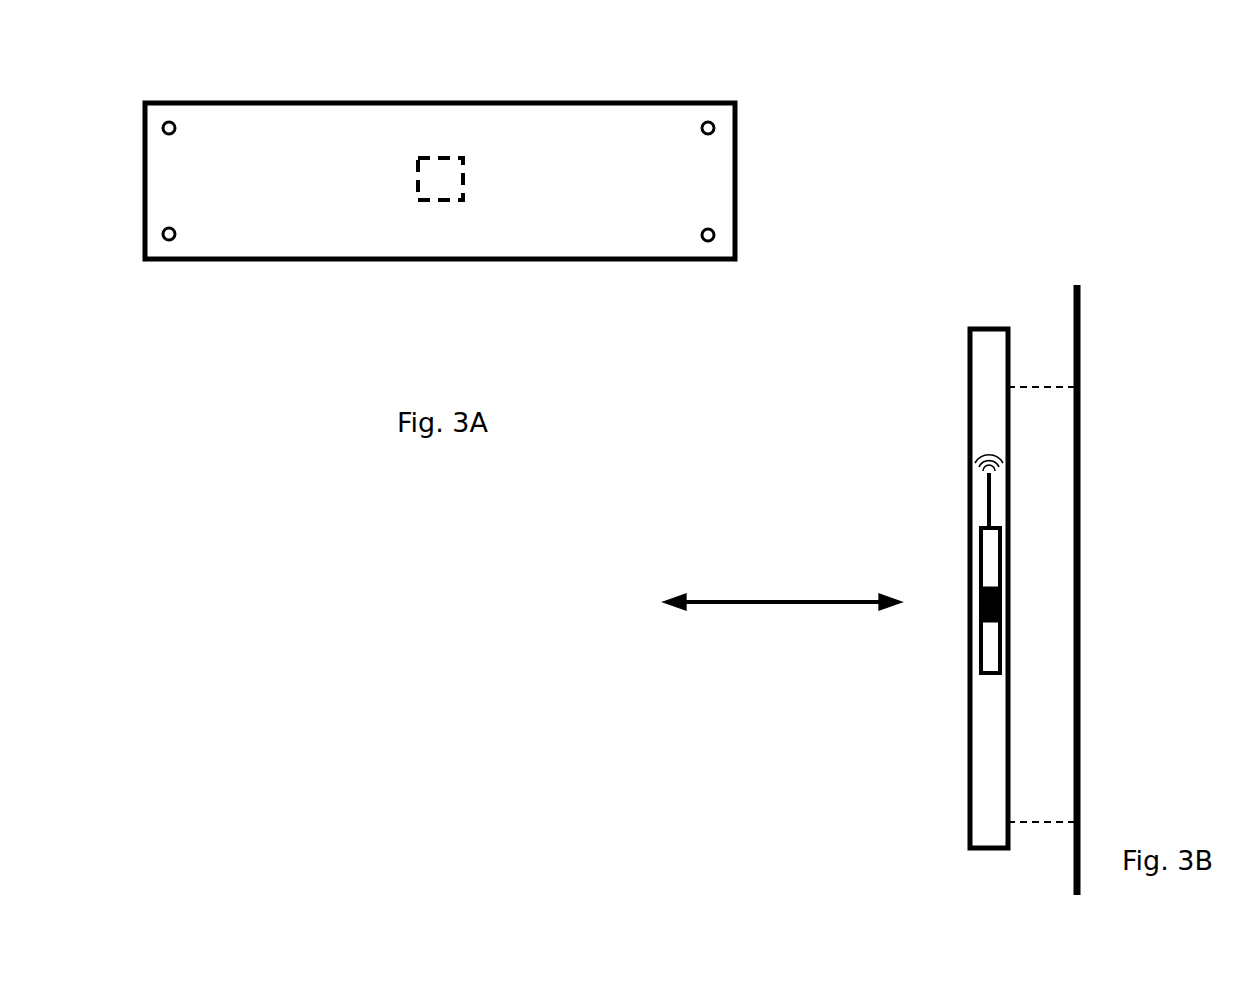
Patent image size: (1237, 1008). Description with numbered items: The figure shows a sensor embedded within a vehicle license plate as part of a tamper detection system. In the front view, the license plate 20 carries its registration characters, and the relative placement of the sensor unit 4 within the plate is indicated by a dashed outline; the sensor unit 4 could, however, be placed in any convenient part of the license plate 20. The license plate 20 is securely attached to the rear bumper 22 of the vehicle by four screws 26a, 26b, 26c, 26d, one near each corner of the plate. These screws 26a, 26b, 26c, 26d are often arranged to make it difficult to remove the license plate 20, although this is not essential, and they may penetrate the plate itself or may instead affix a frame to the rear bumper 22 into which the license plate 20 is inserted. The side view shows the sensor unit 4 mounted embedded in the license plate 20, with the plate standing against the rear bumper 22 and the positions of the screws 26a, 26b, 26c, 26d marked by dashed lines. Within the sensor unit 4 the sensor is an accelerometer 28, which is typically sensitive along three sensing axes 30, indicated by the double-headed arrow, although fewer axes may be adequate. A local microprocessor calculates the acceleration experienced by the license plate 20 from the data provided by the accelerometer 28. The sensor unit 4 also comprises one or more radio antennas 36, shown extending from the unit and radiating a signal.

In FIG. 3A, the sensor unit 4 is at (460, 200).
In FIG. 3B, the sensor unit 4 is at (980, 562).
In FIG. 3A, the license plate 20 is at (314, 287).
In FIG. 3B, the license plate 20 is at (972, 458).
In FIG. 3B, the rear bumper 22 is at (1081, 445).
In FIG. 3A, the screw 26a is at (163, 122).
In FIG. 3B, the screw 26a is at (1043, 387).
In FIG. 3A, the screw 26b is at (715, 125).
In FIG. 3B, the screw 26b is at (1042, 351).
In FIG. 3A, the screw 26c is at (165, 242).
In FIG. 3B, the screw 26c is at (1060, 822).
In FIG. 3A, the screw 26d is at (715, 235).
In FIG. 3B, the screw 26d is at (1041, 798).
In FIG. 3B, the accelerometer 28 is at (1000, 607).
In FIG. 3B, the sensing axes 30 is at (760, 605).
In FIG. 3B, the radio antenna 36 is at (992, 500).